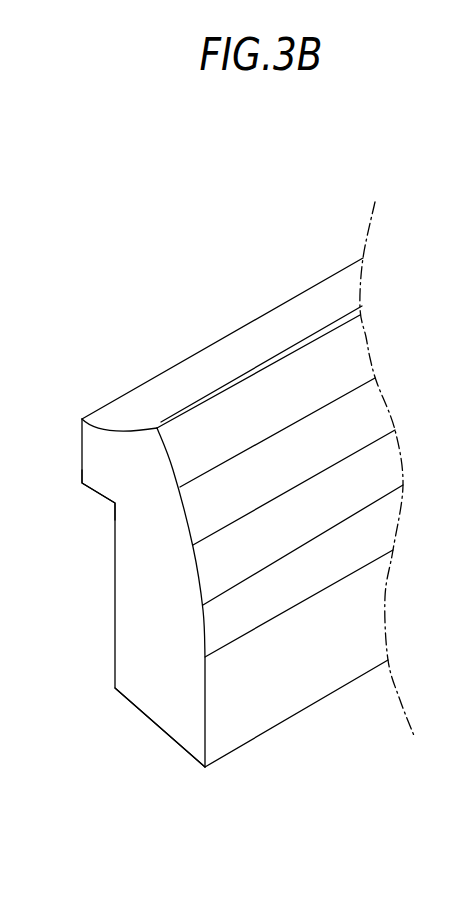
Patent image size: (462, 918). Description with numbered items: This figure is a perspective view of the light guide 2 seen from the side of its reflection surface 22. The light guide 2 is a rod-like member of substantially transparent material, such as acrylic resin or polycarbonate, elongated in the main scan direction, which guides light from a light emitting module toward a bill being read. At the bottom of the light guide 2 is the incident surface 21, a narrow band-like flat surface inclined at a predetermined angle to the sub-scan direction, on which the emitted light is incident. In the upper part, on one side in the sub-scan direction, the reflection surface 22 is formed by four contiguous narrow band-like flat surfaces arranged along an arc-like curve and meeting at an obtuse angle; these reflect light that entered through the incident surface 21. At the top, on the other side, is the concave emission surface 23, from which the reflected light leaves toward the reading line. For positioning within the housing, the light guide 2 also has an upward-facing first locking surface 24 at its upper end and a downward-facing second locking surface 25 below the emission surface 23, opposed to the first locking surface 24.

The light guide 2 is at (142, 322).
The incident surface 21 is at (140, 715).
The reflection surface 22 is at (377, 312).
The emission surface 23 is at (242, 357).
The first locking surface 24 is at (312, 337).
The second locking surface 25 is at (100, 500).